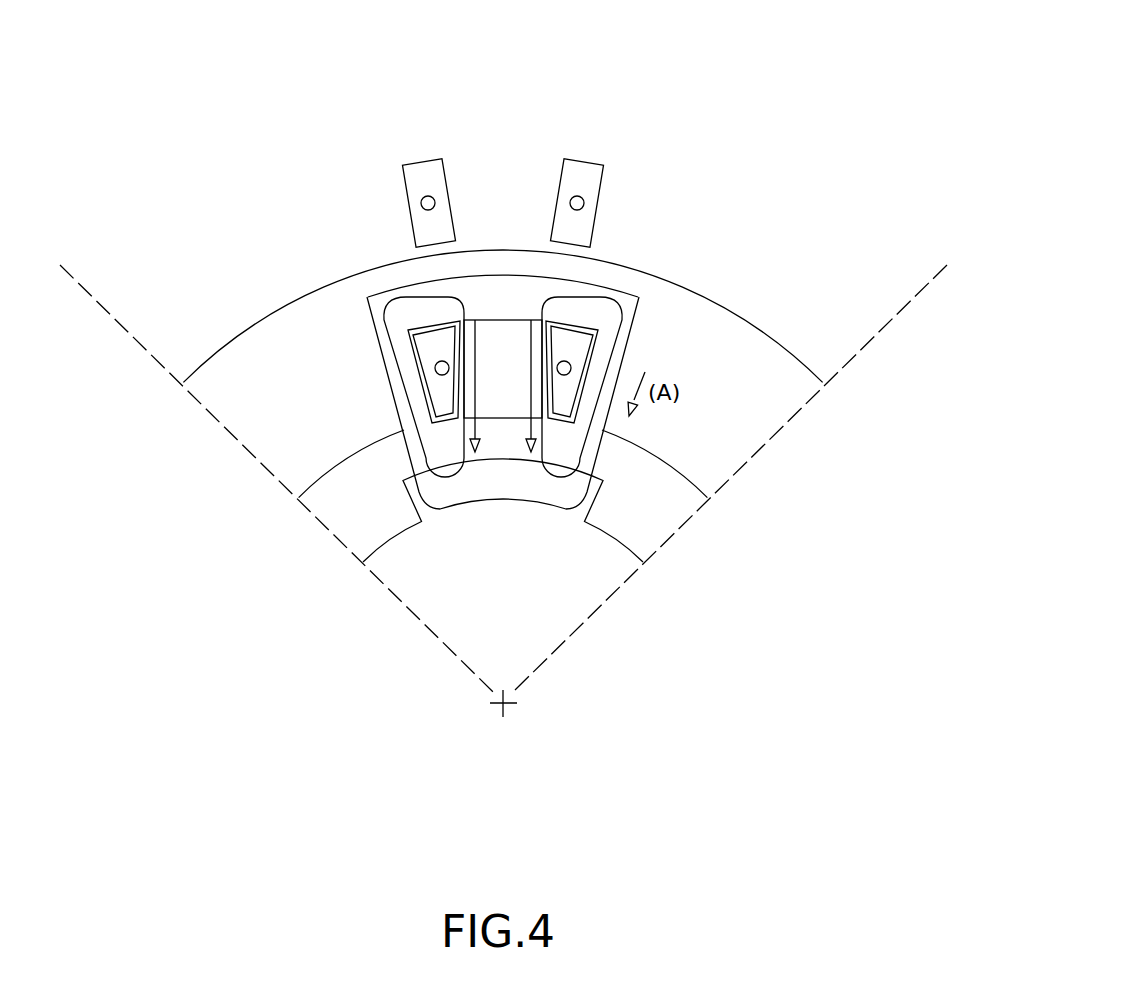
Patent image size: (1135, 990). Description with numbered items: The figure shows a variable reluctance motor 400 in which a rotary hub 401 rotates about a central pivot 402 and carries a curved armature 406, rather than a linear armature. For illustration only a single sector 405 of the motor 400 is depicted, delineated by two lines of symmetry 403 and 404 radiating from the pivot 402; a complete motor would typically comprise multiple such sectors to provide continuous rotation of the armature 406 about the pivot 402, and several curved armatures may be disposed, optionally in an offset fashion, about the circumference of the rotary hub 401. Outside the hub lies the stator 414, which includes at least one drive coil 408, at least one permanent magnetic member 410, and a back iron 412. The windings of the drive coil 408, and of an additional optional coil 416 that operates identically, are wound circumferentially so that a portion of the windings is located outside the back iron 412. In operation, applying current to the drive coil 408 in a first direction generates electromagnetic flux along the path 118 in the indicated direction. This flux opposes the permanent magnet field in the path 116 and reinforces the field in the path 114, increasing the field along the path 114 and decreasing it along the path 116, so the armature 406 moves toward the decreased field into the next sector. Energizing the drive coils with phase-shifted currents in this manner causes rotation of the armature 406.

The motor 400 is at (694, 83).
The rotary hub 401 is at (524, 562).
The central pivot 402 is at (509, 706).
The line of symmetry 403 is at (768, 476).
The line of symmetry 404 is at (256, 484).
The sector 405 is at (806, 231).
The armature 406 is at (390, 503).
The drive coil 408 is at (465, 298).
The magnetic member 410 is at (485, 376).
The back iron 412 is at (324, 397).
The stator 414 is at (498, 295).
The coil 416 is at (590, 298).
The path 114 is at (387, 287).
The path 116 is at (634, 296).
The path 118 is at (652, 352).